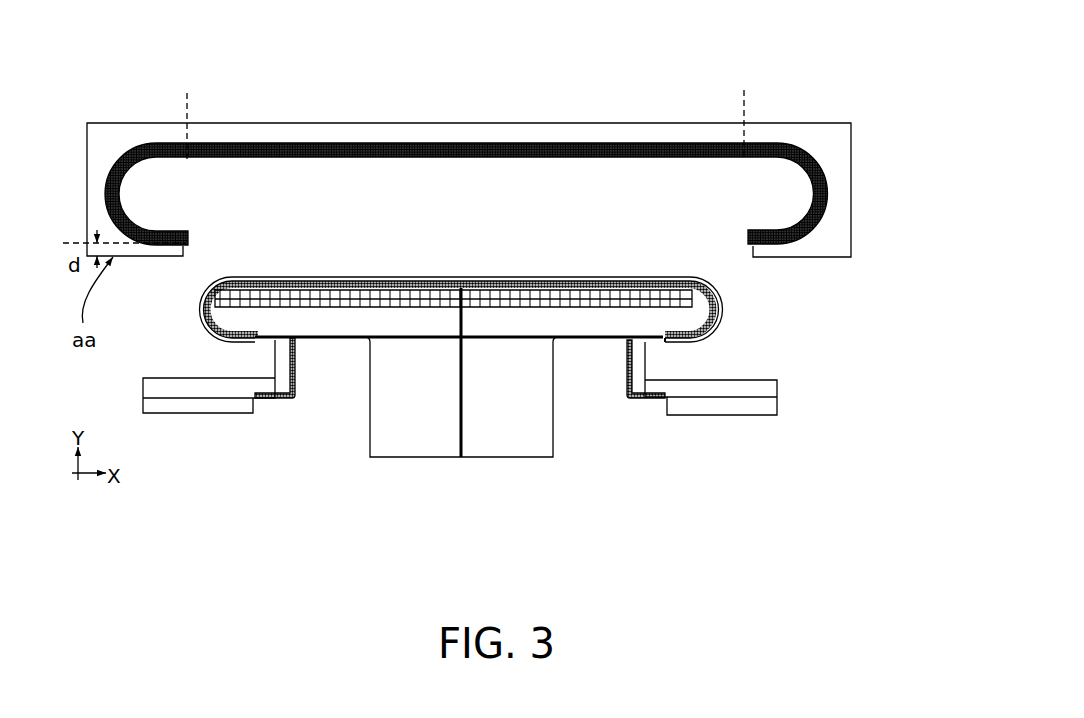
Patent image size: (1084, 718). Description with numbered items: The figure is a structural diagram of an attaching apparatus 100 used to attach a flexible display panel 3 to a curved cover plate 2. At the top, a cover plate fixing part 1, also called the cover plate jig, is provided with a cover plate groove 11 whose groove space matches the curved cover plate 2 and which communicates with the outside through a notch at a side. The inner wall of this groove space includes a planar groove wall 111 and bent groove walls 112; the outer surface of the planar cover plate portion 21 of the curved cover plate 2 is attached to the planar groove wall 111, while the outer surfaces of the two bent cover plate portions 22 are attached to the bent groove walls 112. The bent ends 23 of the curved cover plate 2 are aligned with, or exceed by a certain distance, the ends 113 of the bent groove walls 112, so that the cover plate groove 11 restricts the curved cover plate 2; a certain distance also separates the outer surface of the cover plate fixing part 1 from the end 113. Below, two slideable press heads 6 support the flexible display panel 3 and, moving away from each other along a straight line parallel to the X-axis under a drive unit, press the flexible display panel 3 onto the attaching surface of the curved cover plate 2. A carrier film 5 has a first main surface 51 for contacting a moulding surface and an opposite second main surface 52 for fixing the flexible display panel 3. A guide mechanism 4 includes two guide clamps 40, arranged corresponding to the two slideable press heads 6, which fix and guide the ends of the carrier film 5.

The attaching apparatus 100 is at (106, 60).
The cover plate fixing part 1 is at (663, 138).
The cover plate groove 11 is at (760, 180).
The planar groove wall 111 is at (517, 142).
The bent groove wall 112 is at (827, 188).
The end of bent groove wall 113 is at (186, 248).
The curved cover plate 2 is at (808, 44).
The planar cover plate portion 21 is at (728, 143).
The bent cover plate portion 22 is at (800, 163).
The bent end 23 is at (191, 246).
The flexible display panel 3 is at (720, 299).
The guide mechanism 4 is at (458, 436).
The guide clamp 40 is at (190, 415).
The carrier film 5 is at (293, 402).
The first main surface 51 is at (625, 343).
The second main surface 52 is at (662, 341).
The slideable press head 6 is at (395, 418).